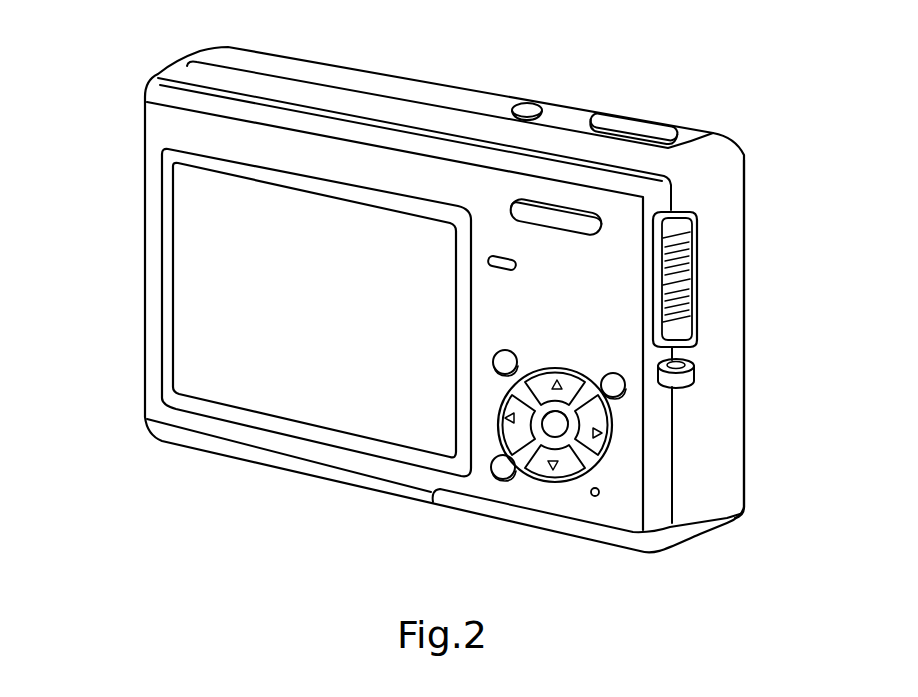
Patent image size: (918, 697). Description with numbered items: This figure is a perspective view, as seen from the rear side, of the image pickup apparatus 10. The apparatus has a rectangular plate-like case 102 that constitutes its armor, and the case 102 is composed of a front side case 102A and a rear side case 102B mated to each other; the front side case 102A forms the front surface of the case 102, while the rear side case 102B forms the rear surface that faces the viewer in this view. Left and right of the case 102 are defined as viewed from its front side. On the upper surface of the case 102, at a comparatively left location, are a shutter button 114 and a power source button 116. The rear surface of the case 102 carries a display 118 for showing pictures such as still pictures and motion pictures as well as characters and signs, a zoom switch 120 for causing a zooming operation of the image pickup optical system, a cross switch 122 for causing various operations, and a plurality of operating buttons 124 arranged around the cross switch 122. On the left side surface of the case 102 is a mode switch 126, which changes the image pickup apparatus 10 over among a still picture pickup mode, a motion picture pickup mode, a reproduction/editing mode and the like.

The image pickup apparatus 10 is at (118, 105).
The case 102 is at (138, 138).
The front side case 102A is at (747, 463).
The rear side case 102B is at (227, 432).
The shutter button 114 is at (657, 128).
The power source button 116 is at (528, 107).
The display 118 is at (237, 205).
The zoom switch 120 is at (577, 217).
The cross switch 122 is at (548, 462).
The operating buttons 124 is at (503, 362).
The mode switch 126 is at (690, 318).